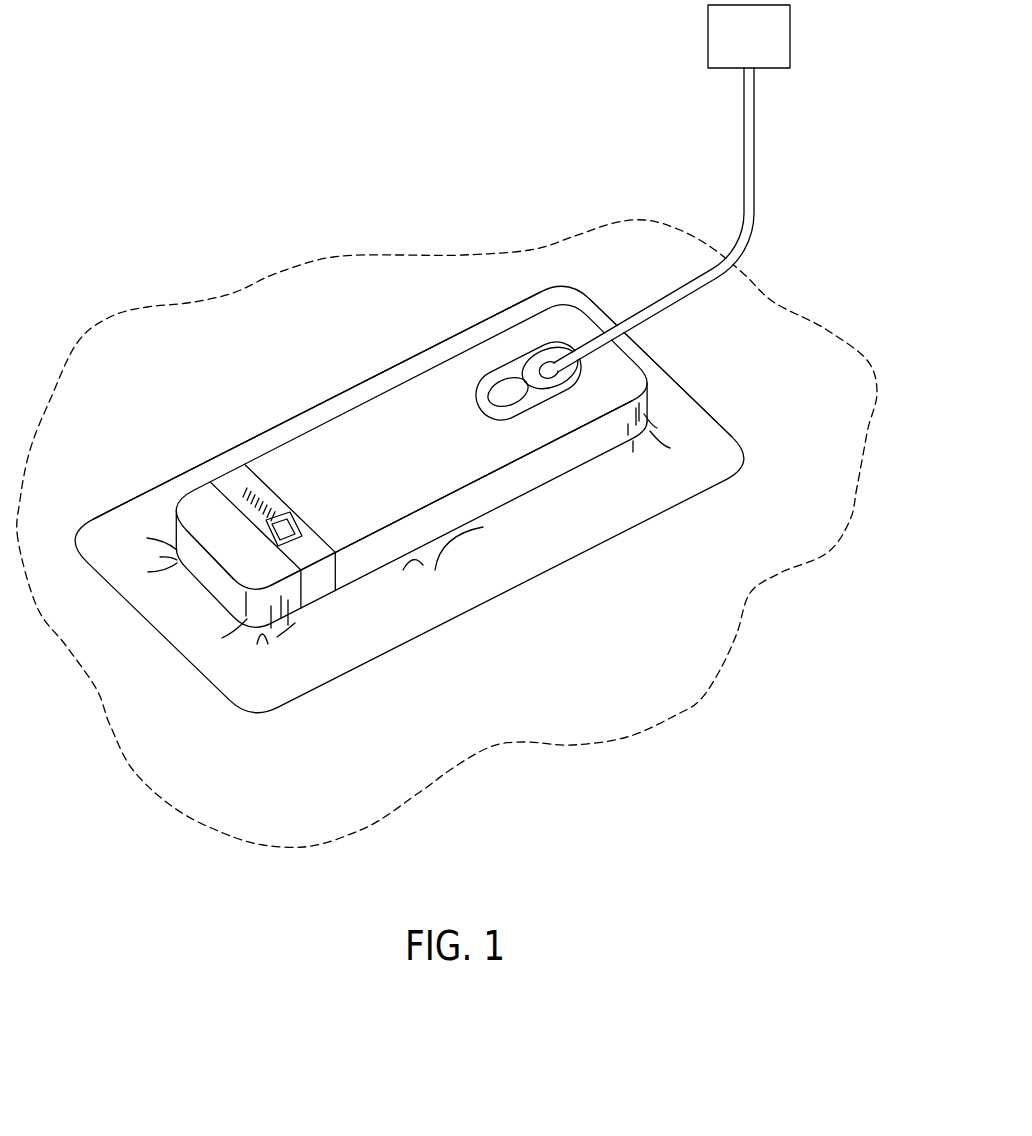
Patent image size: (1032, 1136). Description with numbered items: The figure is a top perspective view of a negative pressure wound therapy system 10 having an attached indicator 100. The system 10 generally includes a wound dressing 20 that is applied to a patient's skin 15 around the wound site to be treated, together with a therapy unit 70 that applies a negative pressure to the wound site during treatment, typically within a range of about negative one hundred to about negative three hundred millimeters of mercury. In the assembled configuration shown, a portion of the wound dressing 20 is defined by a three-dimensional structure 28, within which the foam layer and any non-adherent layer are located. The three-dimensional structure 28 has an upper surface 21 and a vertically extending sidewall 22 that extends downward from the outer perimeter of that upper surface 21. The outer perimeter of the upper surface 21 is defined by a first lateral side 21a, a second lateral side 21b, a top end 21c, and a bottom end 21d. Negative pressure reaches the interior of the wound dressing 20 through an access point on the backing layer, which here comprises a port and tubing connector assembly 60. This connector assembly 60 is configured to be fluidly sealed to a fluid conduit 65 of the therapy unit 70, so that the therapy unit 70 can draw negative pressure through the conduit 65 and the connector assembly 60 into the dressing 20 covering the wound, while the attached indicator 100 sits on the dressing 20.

The negative pressure wound therapy system 10 is at (293, 132).
The patient's skin 15 is at (377, 762).
The wound dressing 20 is at (784, 462).
The upper surface 21 is at (430, 392).
The first lateral side 21a is at (327, 404).
The second lateral side 21b is at (517, 460).
The top end 21c is at (642, 344).
The bottom end 21d is at (212, 552).
The vertically extending sidewall 22 is at (583, 450).
The three-dimensional structure 28 is at (384, 585).
The port and tubing connector assembly 60 is at (573, 318).
The fluid conduit 65 is at (744, 156).
The therapy unit 70 is at (707, 32).
The attached indicator 100 is at (288, 478).